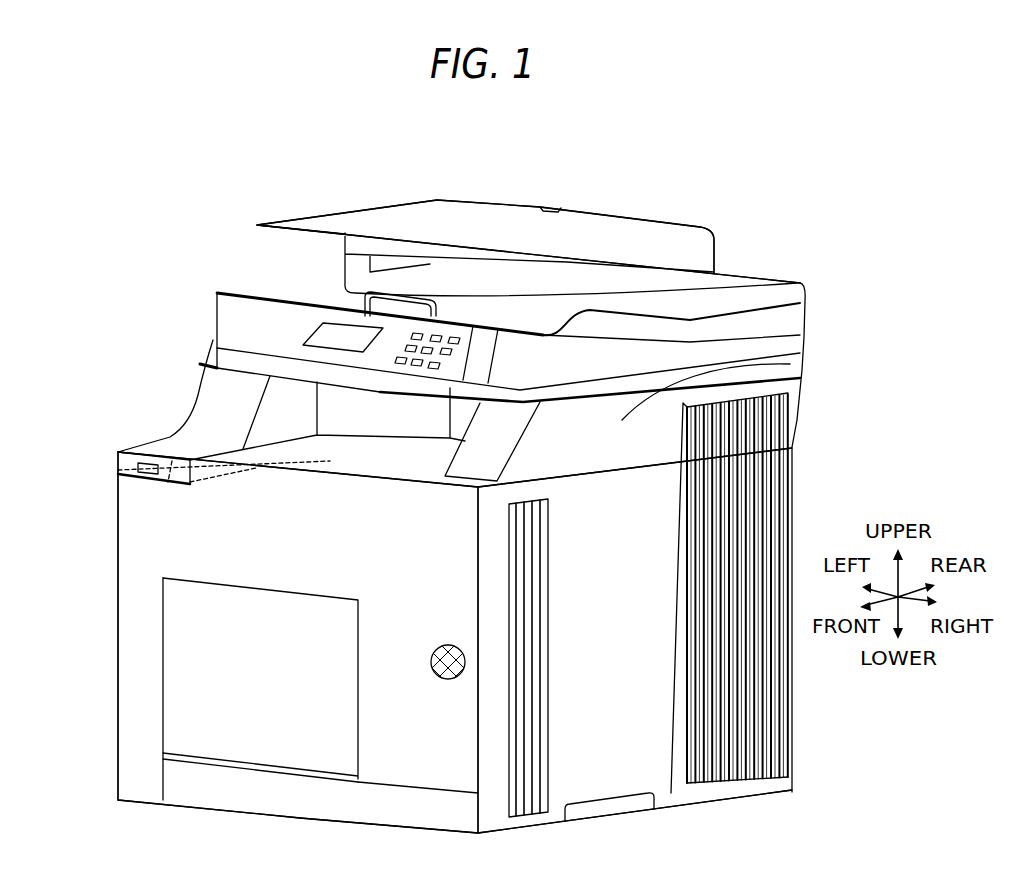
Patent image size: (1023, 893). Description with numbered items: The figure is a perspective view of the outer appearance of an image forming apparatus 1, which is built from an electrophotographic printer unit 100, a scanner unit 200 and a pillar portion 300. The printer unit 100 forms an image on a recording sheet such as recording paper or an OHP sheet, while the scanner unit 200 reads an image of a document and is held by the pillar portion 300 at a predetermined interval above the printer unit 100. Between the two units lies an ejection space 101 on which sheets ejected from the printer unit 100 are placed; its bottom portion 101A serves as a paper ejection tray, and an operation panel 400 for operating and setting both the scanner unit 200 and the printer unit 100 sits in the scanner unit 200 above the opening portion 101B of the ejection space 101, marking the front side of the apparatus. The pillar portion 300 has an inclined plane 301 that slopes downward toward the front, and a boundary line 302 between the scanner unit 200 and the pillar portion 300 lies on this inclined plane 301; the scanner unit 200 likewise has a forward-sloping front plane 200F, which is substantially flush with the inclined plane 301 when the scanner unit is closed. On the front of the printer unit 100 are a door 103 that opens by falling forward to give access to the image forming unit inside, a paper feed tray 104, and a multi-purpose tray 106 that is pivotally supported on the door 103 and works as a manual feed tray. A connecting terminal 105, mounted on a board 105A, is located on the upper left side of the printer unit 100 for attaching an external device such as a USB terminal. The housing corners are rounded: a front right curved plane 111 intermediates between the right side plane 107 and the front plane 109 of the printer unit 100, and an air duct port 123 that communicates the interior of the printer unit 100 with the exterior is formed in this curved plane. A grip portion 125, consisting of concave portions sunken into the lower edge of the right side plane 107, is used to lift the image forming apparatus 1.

The image forming apparatus 1 is at (422, 199).
The printer unit 100 is at (136, 584).
The ejection space 101 is at (350, 412).
The bottom portion of the ejection space 101A is at (397, 442).
The opening portion of the ejection space 101B is at (467, 378).
The door 103 is at (118, 652).
The paper feed tray 104 is at (217, 790).
The connecting terminal 105 is at (145, 462).
The board 105A is at (170, 482).
The multi-purpose tray 106 is at (192, 695).
The right side plane 107 is at (650, 698).
The front plane 109 is at (142, 753).
The front right curved plane 111 is at (427, 742).
The air duct port 123 is at (449, 680).
The grip portion 125 is at (627, 806).
The scanner unit 200 is at (735, 293).
The front plane of the scanner unit 200F is at (540, 350).
The pillar portion 300 is at (206, 384).
The inclined plane 301 is at (197, 413).
The boundary line 302 is at (207, 362).
The operation panel 400 is at (282, 315).